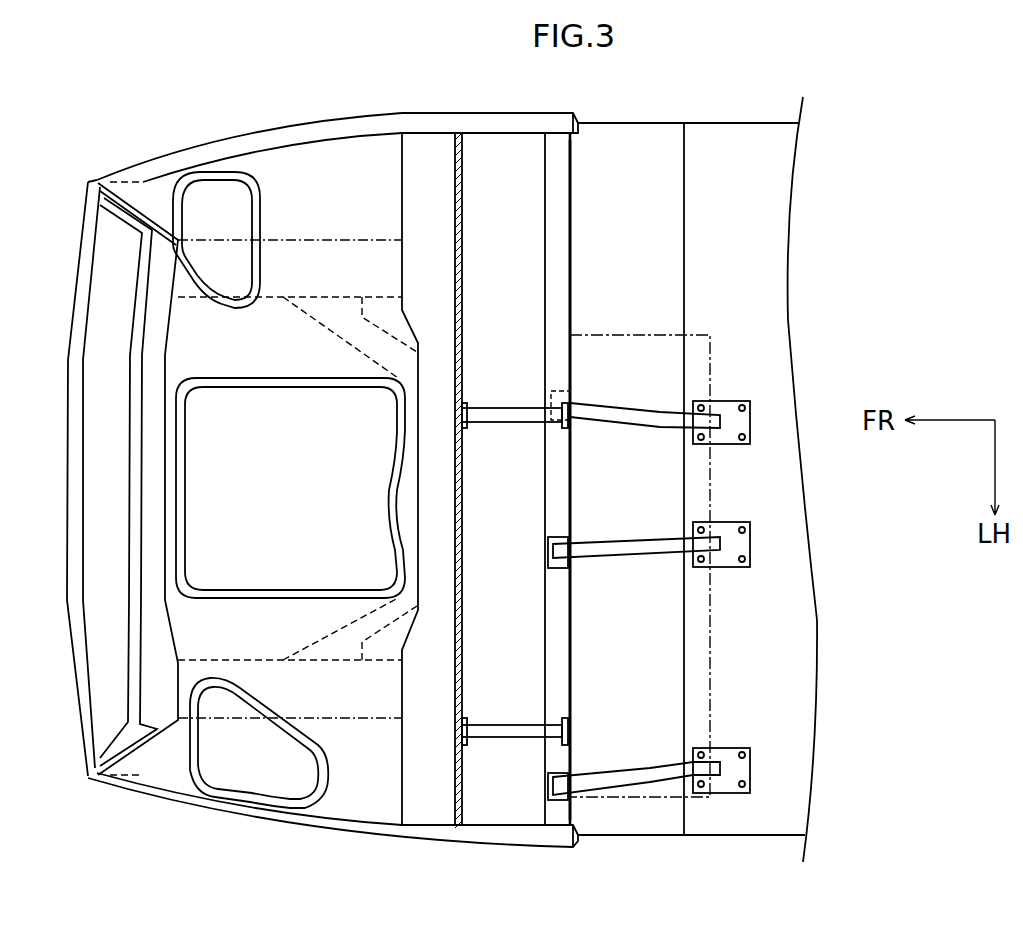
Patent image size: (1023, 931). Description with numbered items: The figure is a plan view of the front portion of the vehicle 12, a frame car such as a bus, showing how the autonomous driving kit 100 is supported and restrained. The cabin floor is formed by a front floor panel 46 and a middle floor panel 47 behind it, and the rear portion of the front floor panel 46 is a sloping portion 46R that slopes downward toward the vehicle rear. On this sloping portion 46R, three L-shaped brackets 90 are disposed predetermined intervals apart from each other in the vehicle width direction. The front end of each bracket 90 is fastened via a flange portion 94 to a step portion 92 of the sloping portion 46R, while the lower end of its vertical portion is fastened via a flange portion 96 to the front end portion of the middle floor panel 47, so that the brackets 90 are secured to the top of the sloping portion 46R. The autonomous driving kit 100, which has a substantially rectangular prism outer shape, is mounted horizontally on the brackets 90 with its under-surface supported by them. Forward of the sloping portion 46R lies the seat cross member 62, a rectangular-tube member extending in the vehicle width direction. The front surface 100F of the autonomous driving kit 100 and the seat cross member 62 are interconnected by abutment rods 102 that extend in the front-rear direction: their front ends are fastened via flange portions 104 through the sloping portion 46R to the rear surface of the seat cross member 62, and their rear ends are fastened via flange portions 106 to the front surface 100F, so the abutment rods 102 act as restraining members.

The vehicle 12 is at (428, 104).
The front floor panel 46 is at (462, 518).
The sloping portion 46R is at (637, 840).
The middle floor panel 47 is at (745, 840).
The seat cross member 62 is at (398, 497).
The bracket 90 is at (636, 410).
The step portion 92 is at (573, 458).
The flange portion 94 is at (553, 391).
The flange portion 96 is at (728, 401).
The autonomous driving kit 100 is at (632, 325).
The front surface 100F is at (569, 621).
The abutment rod 102 is at (500, 406).
The flange portion 104 is at (466, 401).
The flange portion 106 is at (566, 436).